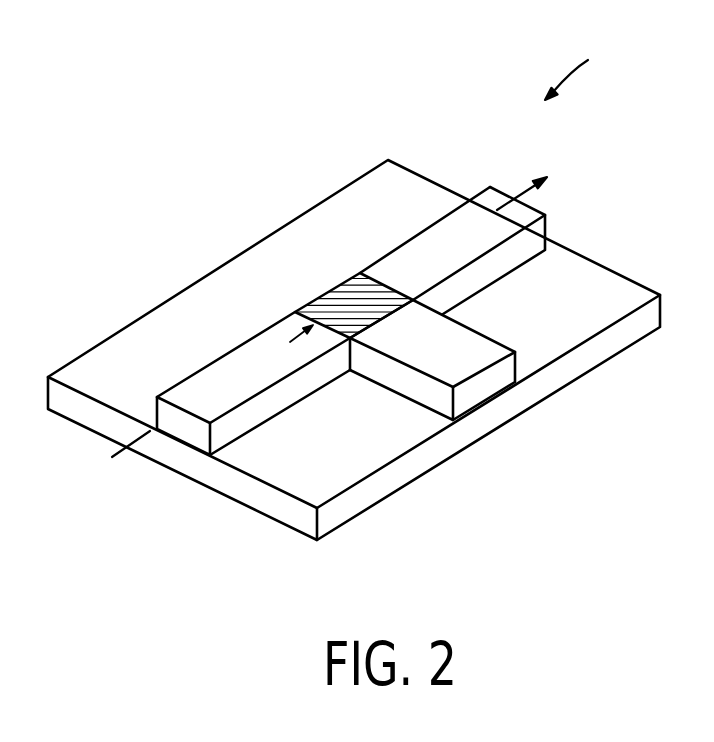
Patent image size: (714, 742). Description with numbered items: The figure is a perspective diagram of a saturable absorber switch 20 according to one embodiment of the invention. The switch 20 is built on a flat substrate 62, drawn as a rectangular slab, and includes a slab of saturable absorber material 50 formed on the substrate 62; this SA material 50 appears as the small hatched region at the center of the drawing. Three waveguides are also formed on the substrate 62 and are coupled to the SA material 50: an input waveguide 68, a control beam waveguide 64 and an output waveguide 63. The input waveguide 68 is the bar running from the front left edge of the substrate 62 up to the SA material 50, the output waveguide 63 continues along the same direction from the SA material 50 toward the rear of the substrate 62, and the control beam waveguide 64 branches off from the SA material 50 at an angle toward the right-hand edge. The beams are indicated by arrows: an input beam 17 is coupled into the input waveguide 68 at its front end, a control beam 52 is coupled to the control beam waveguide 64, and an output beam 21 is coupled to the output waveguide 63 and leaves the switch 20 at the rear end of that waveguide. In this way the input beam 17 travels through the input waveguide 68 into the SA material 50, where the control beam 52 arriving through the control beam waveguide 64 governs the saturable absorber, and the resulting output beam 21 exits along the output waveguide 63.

The switch 20 is at (583, 67).
The output beam 21 is at (518, 193).
The input beam 17 is at (146, 437).
The saturable absorber material 50 is at (350, 307).
The control beam 52 is at (472, 367).
The substrate 62 is at (122, 354).
The output waveguide 63 is at (533, 235).
The control beam waveguide 64 is at (390, 373).
The input waveguide 68 is at (290, 400).